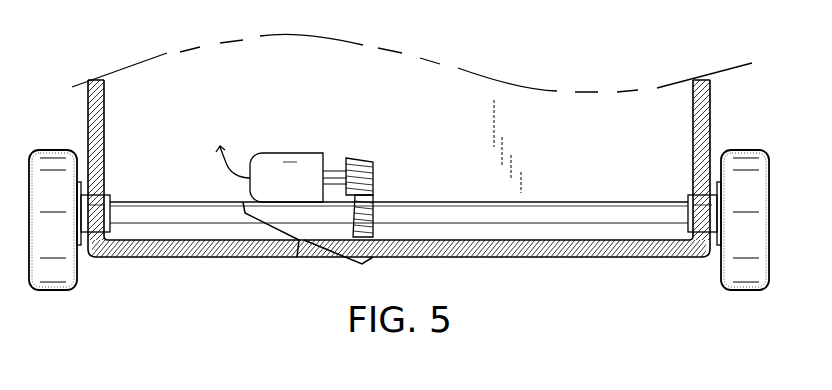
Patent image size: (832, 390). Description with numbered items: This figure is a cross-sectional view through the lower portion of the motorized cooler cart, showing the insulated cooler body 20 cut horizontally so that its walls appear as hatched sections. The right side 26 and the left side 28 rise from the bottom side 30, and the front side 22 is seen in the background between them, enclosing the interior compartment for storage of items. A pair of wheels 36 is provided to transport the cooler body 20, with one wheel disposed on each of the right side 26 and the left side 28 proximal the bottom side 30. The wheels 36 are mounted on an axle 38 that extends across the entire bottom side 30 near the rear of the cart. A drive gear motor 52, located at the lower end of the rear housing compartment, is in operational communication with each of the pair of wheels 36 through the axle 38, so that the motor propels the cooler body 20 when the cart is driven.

The insulated cooler body 20 is at (92, 258).
The front side 22 is at (668, 118).
The right side 26 is at (88, 101).
The left side 28 is at (710, 82).
The bottom side 30 is at (198, 257).
The wheels 36 is at (743, 287).
The axle 38 is at (560, 215).
The drive gear motor 52 is at (297, 257).